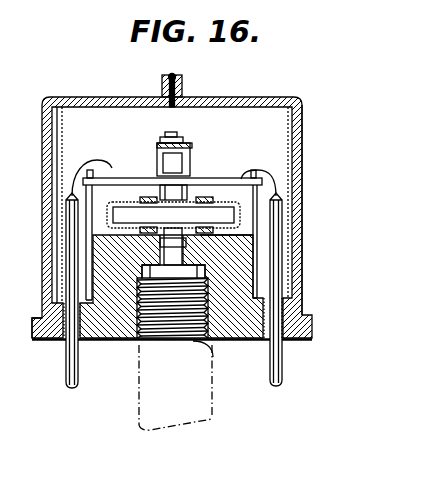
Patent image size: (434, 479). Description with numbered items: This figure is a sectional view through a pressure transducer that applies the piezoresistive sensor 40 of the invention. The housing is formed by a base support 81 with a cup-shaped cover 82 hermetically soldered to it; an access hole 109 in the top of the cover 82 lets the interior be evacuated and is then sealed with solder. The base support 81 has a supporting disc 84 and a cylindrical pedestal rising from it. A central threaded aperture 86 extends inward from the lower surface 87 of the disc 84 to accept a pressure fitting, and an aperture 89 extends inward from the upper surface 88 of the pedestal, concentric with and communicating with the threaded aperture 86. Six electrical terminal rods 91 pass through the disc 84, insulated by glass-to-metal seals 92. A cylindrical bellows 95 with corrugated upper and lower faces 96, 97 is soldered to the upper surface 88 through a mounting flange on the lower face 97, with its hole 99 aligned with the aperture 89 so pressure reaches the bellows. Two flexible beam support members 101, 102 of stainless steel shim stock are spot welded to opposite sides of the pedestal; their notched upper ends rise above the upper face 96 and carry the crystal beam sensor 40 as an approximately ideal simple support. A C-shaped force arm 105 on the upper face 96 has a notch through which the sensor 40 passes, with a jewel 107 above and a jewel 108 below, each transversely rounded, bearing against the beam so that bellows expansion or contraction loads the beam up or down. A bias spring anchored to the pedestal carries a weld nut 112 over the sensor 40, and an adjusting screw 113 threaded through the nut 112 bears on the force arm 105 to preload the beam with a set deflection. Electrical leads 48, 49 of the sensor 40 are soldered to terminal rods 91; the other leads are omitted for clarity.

The access hole 109 is at (180, 86).
The adjusting screw 113 is at (174, 132).
The weld nut 112 is at (185, 140).
The force arm 105 is at (180, 156).
The jewel 107 is at (186, 180).
The piezoresistive sensor 40 is at (254, 156).
The electrical lead 48 is at (300, 157).
The electrical lead 49 is at (112, 168).
The upper face 96 is at (129, 198).
The jewel 108 is at (158, 176).
The bellows 95 is at (252, 208).
The flexible beam support member 101 is at (255, 210).
The upper surface 88 is at (244, 242).
The cover 82 is at (44, 205).
The flexible beam support member 102 is at (90, 229).
The hole 99 is at (173, 215).
The aperture 89 is at (177, 246).
The lower face 97 is at (171, 286).
The supporting disc 84 is at (32, 332).
The glass-to-metal seal 92 is at (64, 342).
The electrical terminal rod 91 is at (67, 367).
The base support 81 is at (120, 341).
The threaded aperture 86 is at (203, 356).
The lower surface 87 is at (258, 345).